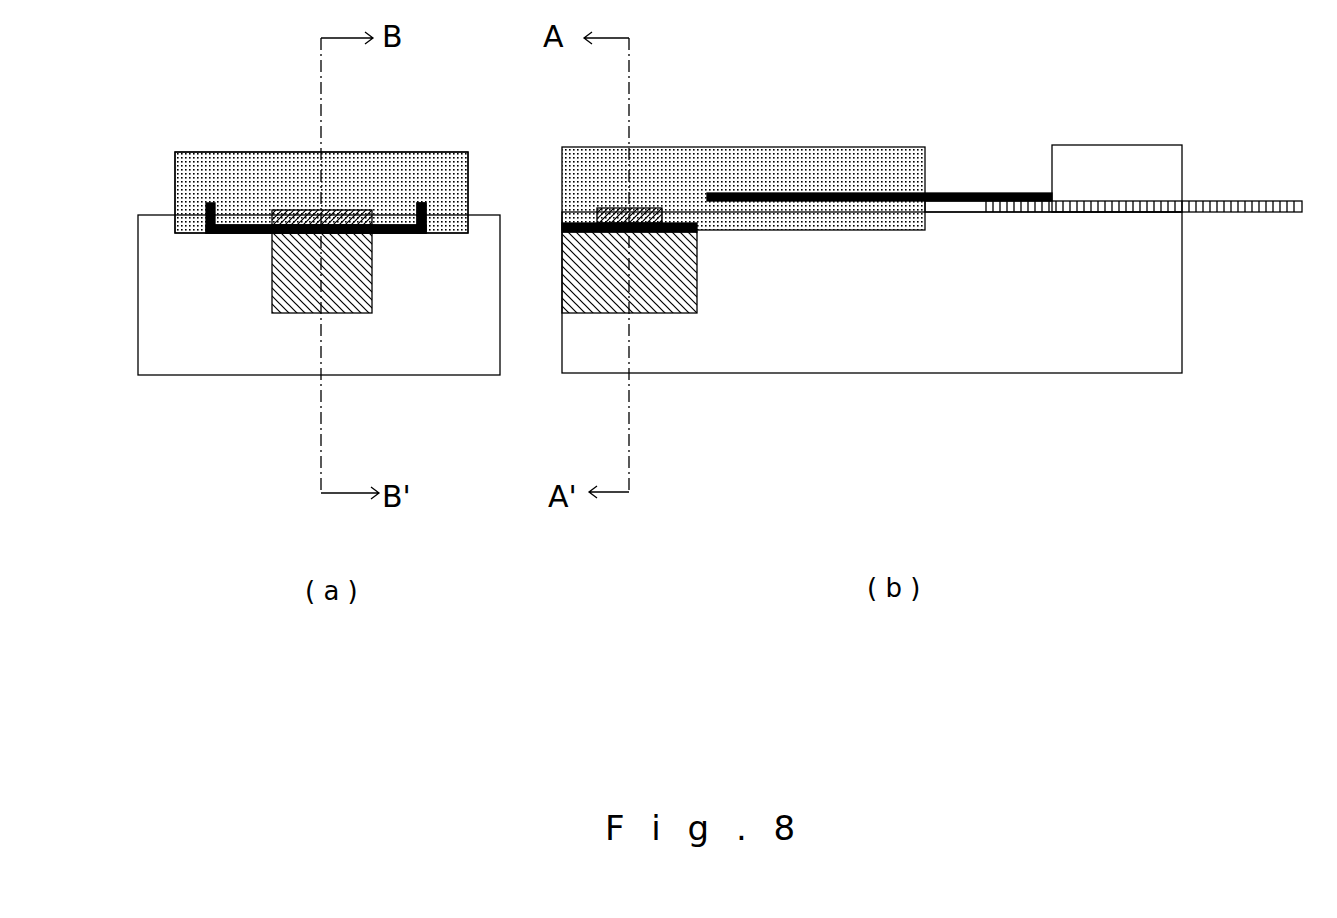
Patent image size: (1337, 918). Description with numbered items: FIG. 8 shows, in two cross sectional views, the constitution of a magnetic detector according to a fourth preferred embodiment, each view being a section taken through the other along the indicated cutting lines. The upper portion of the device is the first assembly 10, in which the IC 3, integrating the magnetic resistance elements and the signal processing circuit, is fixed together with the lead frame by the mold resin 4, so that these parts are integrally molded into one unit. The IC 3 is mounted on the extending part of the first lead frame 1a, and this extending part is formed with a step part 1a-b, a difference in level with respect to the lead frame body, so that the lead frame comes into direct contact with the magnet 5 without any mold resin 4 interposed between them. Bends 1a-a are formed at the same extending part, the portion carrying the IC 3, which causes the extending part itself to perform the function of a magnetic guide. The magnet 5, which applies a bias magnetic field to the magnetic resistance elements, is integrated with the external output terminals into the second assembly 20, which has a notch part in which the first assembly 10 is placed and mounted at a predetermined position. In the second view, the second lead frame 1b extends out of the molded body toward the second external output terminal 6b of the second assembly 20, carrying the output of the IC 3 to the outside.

The mold resin 4 is at (192, 160).
The first assembly 10 is at (255, 152).
The first lead frame 1a is at (230, 222).
The bends 1a-a is at (427, 222).
The step part 1a-b is at (387, 236).
The IC 3 is at (358, 205).
The magnet 5 is at (297, 313).
The second assembly 20 is at (200, 380).
The second lead frame 1b is at (958, 193).
The second external output terminal 6b is at (1242, 212).